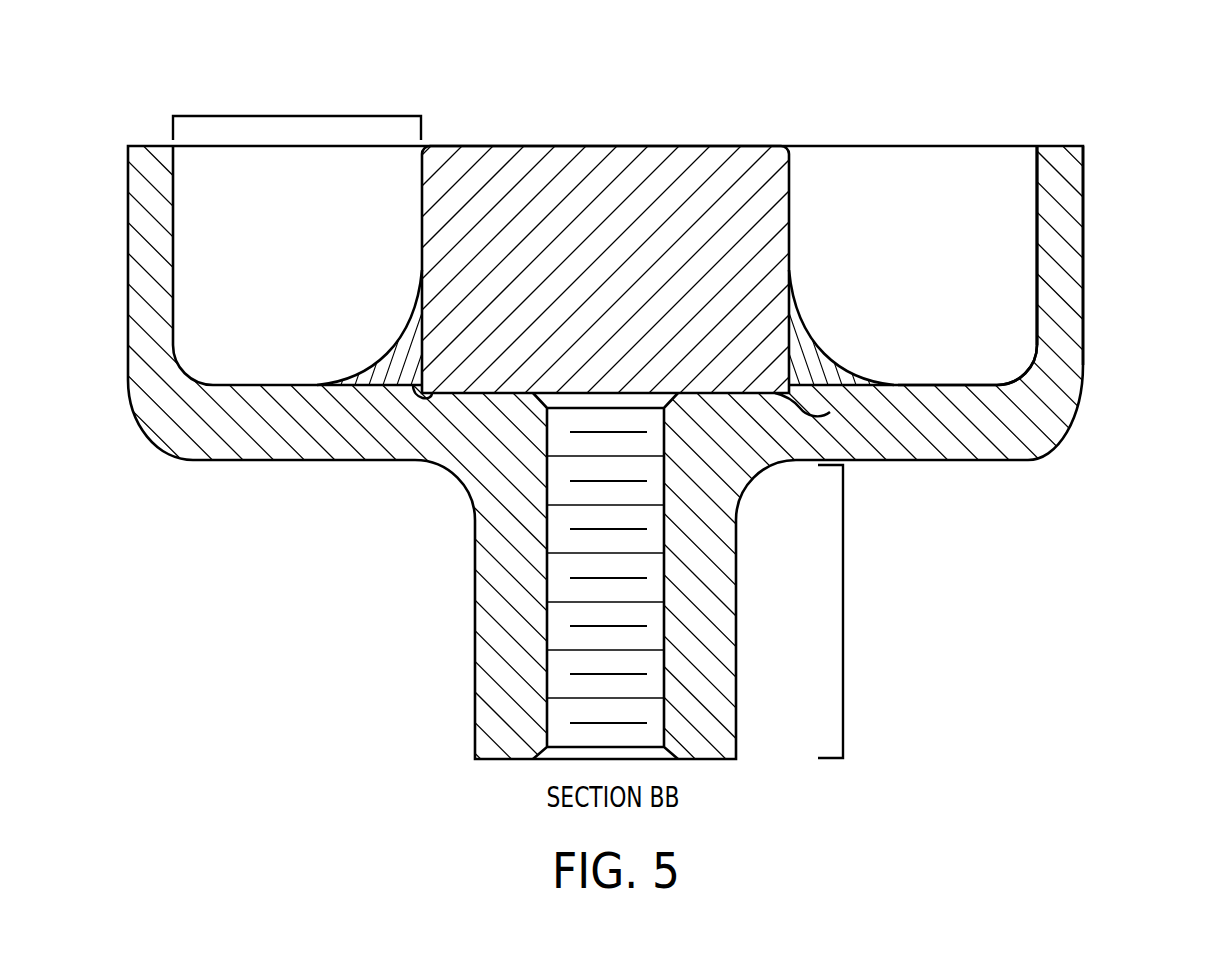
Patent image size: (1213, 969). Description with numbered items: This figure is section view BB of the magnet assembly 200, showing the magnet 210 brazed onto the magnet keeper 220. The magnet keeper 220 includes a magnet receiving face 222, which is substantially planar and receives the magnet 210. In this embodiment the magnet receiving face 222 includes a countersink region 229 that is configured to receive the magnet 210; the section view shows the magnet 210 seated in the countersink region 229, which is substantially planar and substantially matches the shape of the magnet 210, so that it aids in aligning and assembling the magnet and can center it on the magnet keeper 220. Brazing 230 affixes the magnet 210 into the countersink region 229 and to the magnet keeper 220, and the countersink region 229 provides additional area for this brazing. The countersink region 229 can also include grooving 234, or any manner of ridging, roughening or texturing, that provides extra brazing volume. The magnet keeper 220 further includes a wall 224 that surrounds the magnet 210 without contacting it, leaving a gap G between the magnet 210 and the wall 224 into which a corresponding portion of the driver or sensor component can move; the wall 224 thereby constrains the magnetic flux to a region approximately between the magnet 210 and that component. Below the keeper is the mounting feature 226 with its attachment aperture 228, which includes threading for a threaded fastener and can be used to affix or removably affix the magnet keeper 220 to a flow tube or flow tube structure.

The magnet assembly 200 is at (316, 650).
The magnet 210 is at (673, 146).
The magnet keeper 220 is at (240, 468).
The magnet receiving face 222 is at (960, 383).
The wall 224 is at (1083, 200).
The mounting feature 226 is at (843, 602).
The attachment aperture 228 is at (575, 562).
The countersink region 229 is at (420, 387).
The brazing 230 is at (397, 348).
The grooving 234 is at (830, 412).
The gap G is at (295, 116).